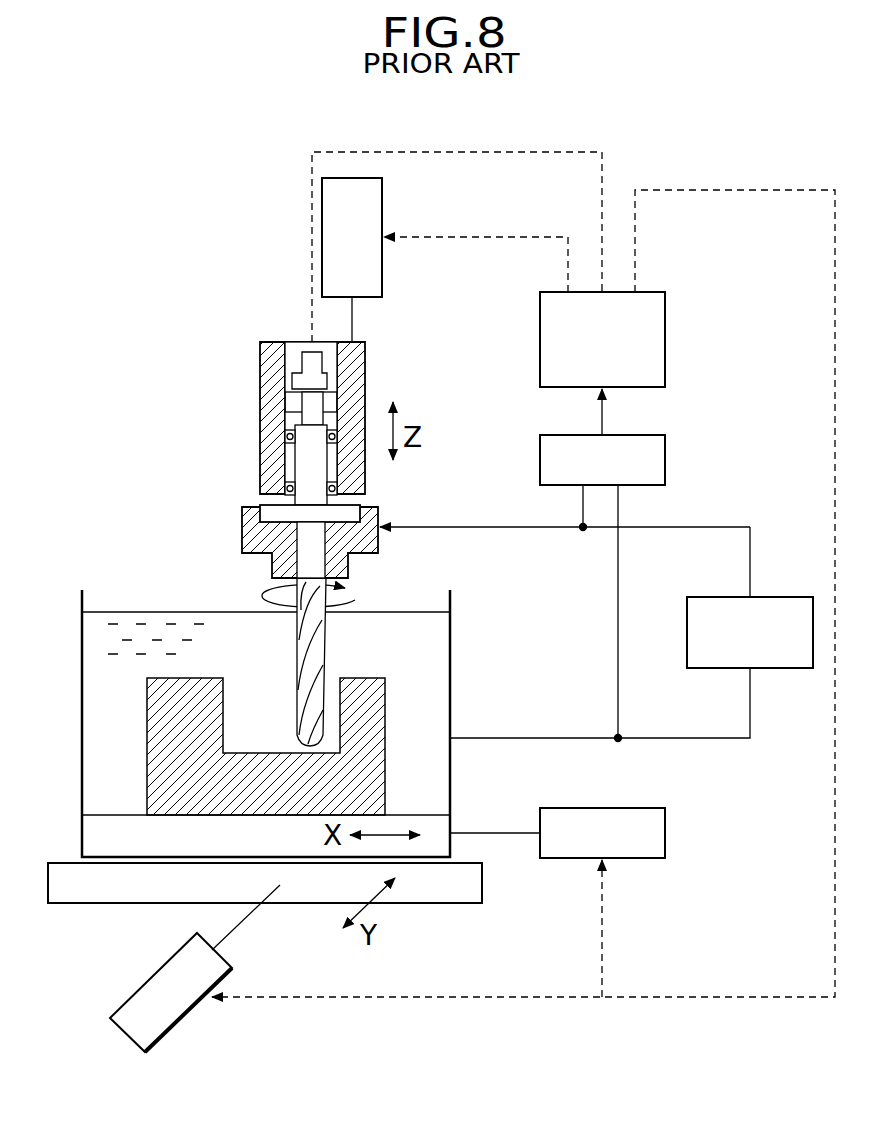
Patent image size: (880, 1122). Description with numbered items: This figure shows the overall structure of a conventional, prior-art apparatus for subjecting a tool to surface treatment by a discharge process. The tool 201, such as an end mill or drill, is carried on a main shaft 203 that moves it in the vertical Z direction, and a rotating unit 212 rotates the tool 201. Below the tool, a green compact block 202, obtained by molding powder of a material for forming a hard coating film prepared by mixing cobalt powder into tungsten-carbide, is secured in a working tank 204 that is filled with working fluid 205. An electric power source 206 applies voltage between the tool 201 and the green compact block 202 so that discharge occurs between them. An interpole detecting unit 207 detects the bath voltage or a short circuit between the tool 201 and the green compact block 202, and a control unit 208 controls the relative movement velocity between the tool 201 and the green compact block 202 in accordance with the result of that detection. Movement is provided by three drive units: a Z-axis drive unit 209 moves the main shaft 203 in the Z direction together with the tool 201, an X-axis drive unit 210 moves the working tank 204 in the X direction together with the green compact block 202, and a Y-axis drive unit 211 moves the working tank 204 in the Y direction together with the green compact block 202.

The tool 201 is at (328, 657).
The green compact block 202 is at (210, 677).
The main shaft 203 is at (260, 400).
The working tank 204 is at (452, 620).
The working fluid 205 is at (437, 698).
The electric power source 206 is at (687, 617).
The interpole detecting unit 207 is at (667, 458).
The control unit 208 is at (667, 333).
The Z-axis drive unit 209 is at (384, 270).
The X-axis drive unit 210 is at (667, 833).
The Y-axis drive unit 211 is at (150, 978).
The rotating unit 212 is at (305, 360).